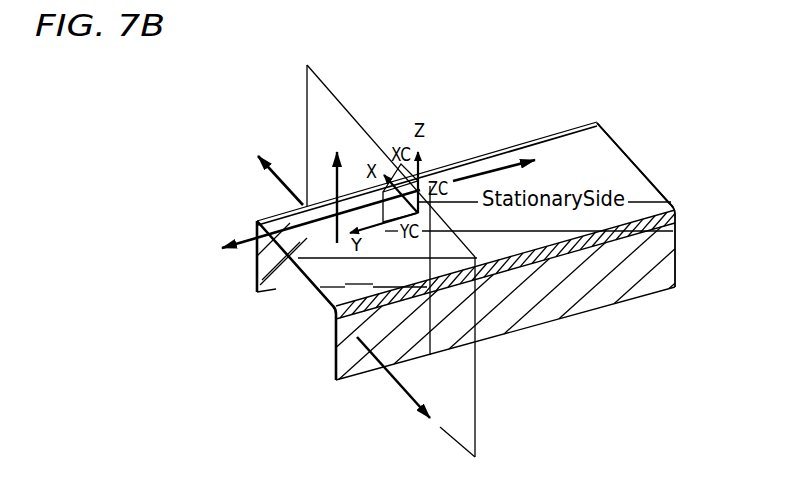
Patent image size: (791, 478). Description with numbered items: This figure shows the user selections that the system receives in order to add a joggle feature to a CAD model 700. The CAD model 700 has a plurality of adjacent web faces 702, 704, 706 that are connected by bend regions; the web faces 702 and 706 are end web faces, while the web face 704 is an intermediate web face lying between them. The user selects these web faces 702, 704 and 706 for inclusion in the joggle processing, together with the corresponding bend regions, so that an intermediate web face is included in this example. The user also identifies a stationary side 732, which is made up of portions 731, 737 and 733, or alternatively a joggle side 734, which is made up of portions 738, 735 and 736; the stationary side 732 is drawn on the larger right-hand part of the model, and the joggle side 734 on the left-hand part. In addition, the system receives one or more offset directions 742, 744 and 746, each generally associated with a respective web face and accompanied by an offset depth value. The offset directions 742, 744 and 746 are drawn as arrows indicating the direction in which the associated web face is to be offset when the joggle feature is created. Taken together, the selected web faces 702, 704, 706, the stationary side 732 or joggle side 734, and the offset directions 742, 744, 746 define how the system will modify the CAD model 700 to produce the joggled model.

The CAD model 700 is at (272, 96).
The web face 702 is at (256, 277).
The web face 704 is at (359, 272).
The web face 706 is at (344, 353).
The portion of stationary side 731 is at (560, 133).
The stationary side 732 is at (500, 166).
The portion of stationary side 733 is at (641, 285).
The joggle side 734 is at (214, 256).
The portion of joggle side 735 is at (308, 268).
The portion of joggle side 736 is at (346, 326).
The portion of stationary side 737 is at (648, 196).
The portion of joggle side 738 is at (256, 229).
The offset direction 742 is at (270, 175).
The offset direction 744 is at (337, 177).
The offset direction 746 is at (390, 374).